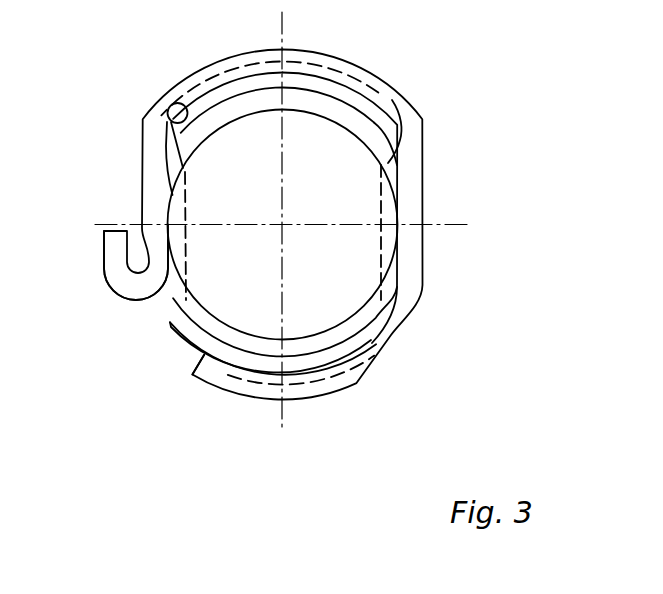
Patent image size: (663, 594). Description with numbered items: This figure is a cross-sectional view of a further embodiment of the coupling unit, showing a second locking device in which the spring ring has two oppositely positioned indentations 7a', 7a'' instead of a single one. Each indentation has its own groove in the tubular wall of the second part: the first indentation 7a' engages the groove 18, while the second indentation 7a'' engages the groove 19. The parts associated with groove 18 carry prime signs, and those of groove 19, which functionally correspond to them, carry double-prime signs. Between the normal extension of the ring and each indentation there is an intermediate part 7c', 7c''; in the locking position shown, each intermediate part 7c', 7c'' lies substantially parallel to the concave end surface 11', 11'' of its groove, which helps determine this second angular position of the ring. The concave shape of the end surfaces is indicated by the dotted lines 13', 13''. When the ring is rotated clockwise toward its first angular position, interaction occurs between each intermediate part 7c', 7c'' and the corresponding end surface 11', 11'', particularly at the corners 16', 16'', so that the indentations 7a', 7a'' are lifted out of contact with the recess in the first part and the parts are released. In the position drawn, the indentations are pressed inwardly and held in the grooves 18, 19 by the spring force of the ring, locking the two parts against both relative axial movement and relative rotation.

The indentation 7a' is at (177, 174).
The indentation 7a'' is at (344, 225).
The intermediate part 7c' is at (223, 128).
The intermediate part 7c'' is at (343, 248).
The end surface 11' is at (222, 93).
The end surface 11'' is at (366, 342).
The dotted line 13' is at (218, 236).
The dotted line 13'' is at (349, 232).
The corner 16' is at (165, 79).
The corner 16'' is at (350, 350).
The groove 18 is at (163, 309).
The groove 19 is at (396, 152).